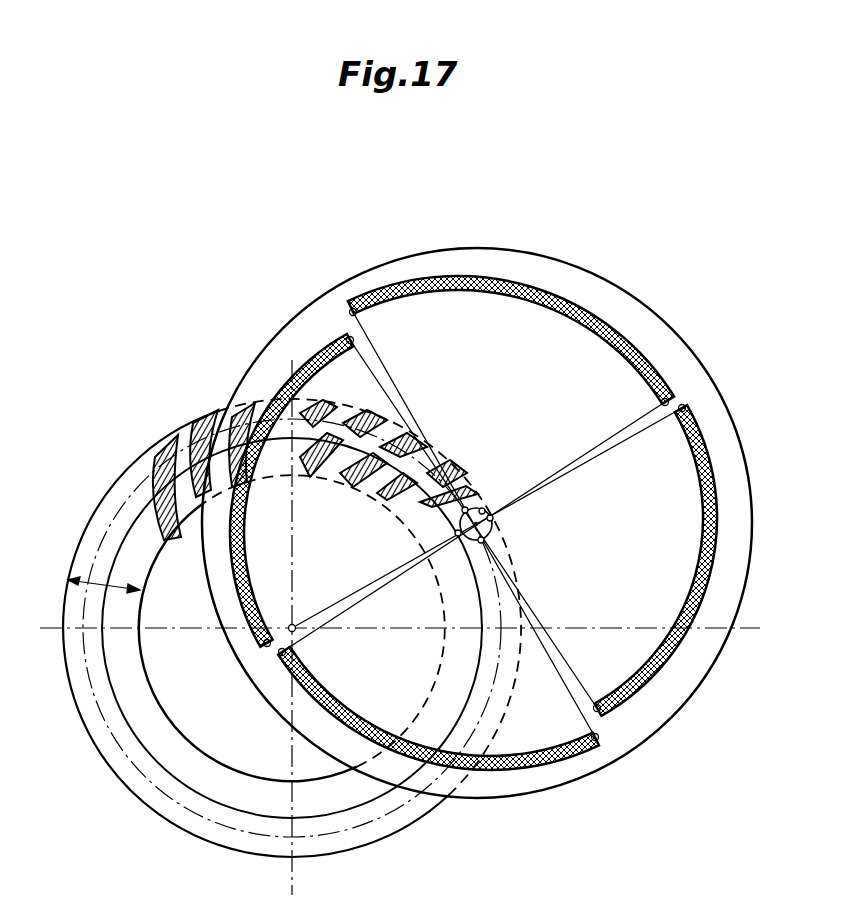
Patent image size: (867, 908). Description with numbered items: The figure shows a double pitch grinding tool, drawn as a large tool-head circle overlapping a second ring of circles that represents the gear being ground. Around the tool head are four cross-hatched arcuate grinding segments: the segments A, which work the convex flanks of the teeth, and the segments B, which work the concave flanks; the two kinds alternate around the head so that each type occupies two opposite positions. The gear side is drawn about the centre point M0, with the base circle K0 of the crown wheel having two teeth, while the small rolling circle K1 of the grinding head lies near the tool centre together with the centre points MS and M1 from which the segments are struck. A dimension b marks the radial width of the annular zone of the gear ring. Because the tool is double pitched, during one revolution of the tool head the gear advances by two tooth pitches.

The segments A is at (557, 293).
The segments B is at (320, 357).
The base circle K0 is at (300, 628).
The rolling circle K1 is at (481, 507).
The segment centre points MS is at (461, 534).
The centre point M1 is at (491, 539).
The centre point M0 of the vane ring M0 is at (279, 618).
The radial width b of the vane ring b is at (104, 589).